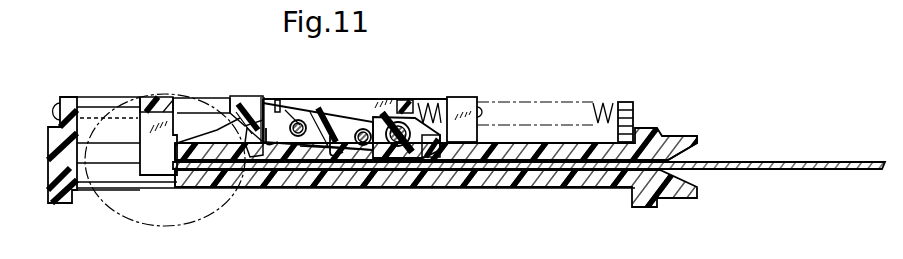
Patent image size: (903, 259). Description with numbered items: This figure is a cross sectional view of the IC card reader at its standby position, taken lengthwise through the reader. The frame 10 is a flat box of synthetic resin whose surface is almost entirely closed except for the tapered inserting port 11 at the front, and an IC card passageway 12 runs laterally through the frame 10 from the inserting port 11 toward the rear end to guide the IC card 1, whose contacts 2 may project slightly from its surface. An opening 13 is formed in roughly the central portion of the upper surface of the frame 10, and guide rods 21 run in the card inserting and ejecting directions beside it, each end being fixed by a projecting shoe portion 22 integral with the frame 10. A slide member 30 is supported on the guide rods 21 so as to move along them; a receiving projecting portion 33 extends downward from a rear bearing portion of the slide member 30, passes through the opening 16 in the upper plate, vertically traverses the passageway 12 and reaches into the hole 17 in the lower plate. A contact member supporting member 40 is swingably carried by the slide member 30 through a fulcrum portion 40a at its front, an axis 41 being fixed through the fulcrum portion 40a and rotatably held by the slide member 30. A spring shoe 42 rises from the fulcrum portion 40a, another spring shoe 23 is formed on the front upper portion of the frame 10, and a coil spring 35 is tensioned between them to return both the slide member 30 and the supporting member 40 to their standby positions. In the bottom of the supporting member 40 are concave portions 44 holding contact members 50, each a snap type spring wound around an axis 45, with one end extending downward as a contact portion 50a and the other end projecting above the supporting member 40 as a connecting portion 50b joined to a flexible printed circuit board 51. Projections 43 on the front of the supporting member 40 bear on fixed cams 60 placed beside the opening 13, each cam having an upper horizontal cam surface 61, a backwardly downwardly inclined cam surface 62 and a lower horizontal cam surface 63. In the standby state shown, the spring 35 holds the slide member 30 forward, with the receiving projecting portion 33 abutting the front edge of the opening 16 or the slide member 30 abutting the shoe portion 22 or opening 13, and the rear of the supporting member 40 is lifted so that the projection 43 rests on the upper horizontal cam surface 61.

The IC card 1 is at (845, 173).
The contacts 2 is at (272, 170).
The frame 10 is at (610, 172).
The inserting port 11 is at (688, 152).
The IC card passageway 12 is at (500, 173).
The opening 13 is at (433, 163).
The opening 16 is at (83, 152).
The hole 17 is at (115, 180).
The guide rods 21 is at (108, 104).
The shoe portions 22 is at (68, 100).
The spring shoe 23 is at (632, 105).
The slide member 30 is at (394, 83).
The receiving projecting portion 33 is at (158, 163).
The coil spring 35 is at (601, 105).
The contact member supporting member 40 is at (380, 158).
The fulcrum portion 40a is at (385, 155).
The axis 41 is at (421, 105).
The spring shoe 42 is at (412, 102).
The projections 43 is at (240, 160).
The concave portions 44 is at (332, 137).
The axis 45 is at (272, 137).
The contact members 50 is at (347, 155).
The contact portion 50a is at (262, 140).
The connecting portion 50b is at (278, 101).
The flexible printed circuit board 51 is at (163, 217).
The fixed cams 60 is at (195, 128).
The upper horizontal cam surface 61 is at (258, 103).
The inclined cam surface 62 is at (205, 128).
The lower horizontal cam surface 63 is at (187, 103).